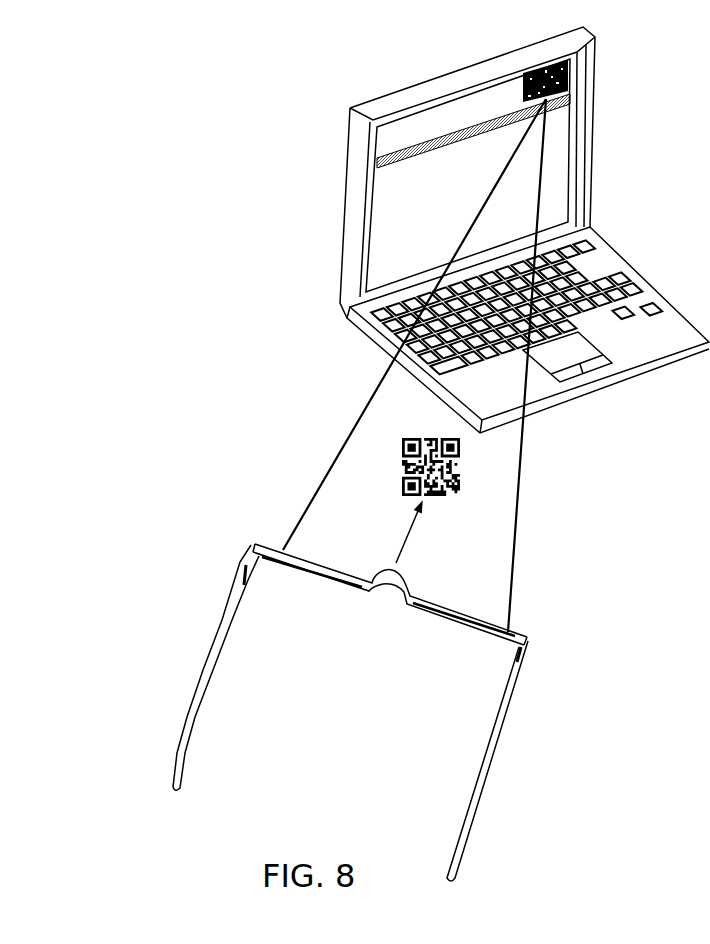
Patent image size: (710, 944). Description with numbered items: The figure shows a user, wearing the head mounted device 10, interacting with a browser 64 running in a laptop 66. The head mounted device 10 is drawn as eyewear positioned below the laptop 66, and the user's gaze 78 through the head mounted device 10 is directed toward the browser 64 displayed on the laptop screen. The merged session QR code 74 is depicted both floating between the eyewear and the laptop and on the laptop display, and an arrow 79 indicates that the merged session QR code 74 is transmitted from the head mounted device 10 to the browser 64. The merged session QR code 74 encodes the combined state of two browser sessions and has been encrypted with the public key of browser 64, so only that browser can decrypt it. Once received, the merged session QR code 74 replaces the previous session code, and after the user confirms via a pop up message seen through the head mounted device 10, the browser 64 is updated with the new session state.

The head mounted device 10 is at (232, 563).
The browser 64 is at (563, 178).
The laptop 66 is at (593, 117).
The merged session QR code 74 is at (568, 73).
The gaze 78 is at (328, 432).
The arrow 79 is at (408, 540).